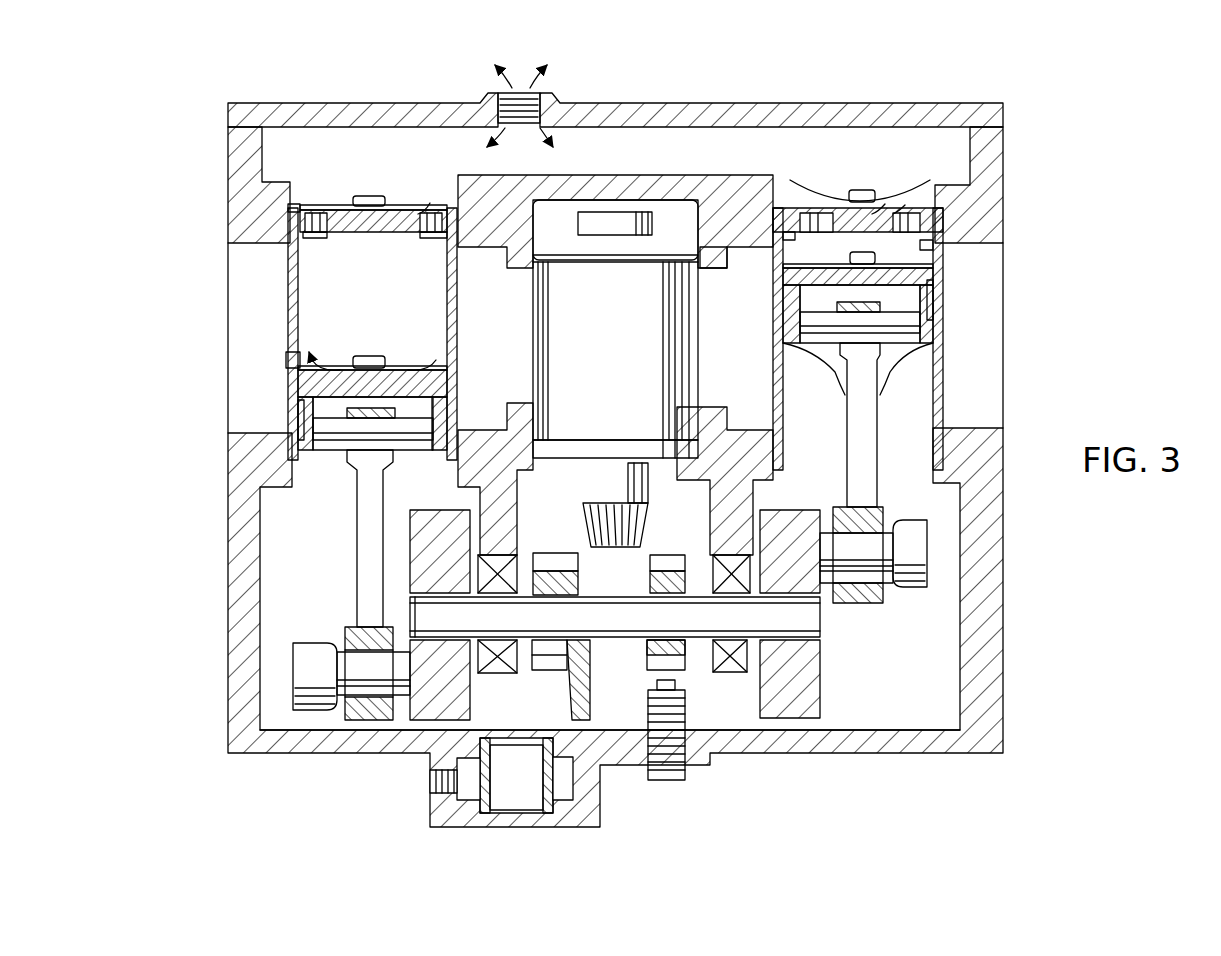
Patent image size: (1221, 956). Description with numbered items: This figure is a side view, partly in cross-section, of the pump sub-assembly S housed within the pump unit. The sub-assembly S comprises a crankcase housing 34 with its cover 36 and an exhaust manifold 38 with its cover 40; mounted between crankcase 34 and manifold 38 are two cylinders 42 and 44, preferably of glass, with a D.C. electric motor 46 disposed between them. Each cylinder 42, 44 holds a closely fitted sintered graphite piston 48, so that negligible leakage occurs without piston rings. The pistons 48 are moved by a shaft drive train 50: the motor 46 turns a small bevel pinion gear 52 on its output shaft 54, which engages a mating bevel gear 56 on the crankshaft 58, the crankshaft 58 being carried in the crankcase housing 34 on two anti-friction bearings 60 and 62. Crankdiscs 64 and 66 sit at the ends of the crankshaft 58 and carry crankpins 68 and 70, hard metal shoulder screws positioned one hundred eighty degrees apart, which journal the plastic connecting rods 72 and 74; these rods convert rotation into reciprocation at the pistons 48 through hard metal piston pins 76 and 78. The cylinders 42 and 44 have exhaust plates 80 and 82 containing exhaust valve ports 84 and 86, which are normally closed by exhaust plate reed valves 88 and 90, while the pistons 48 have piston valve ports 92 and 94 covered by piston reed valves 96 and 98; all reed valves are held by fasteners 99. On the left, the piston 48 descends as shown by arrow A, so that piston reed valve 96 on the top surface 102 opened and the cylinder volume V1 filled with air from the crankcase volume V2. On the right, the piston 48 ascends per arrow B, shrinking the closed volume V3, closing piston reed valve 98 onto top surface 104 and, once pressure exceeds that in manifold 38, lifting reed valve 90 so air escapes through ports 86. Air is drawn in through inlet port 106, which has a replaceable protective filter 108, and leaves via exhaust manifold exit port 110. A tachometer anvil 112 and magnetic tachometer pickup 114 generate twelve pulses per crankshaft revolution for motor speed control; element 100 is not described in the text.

The crankcase housing 34 is at (1003, 645).
The cover 36 is at (1003, 748).
The exhaust manifold 38 is at (705, 133).
The cover 40 is at (300, 103).
The cylinder 42 is at (288, 320).
The cylinder 44 is at (945, 340).
The D.C. electric motor 46 is at (700, 332).
The piston 48 is at (300, 405).
The shaft drive train 50 is at (925, 690).
The bevel pinion gear 52 is at (648, 520).
The motor output shaft 54 is at (664, 462).
The bevel gear 56 is at (585, 568).
The crankshaft 58 is at (822, 626).
The anti-friction bearing 60 is at (495, 675).
The anti-friction bearing 62 is at (728, 673).
The crankdisc 64 is at (425, 510).
The crankdisc 66 is at (820, 690).
The crankpin 68 is at (318, 647).
The crankpin 70 is at (905, 590).
The connecting rod 72 is at (357, 518).
The connecting rod 74 is at (877, 490).
The piston pin 76 is at (328, 443).
The piston pin 78 is at (940, 372).
The exhaust plate 80 is at (395, 233).
The exhaust plate 82 is at (942, 228).
The exhaust valve port 84 is at (428, 215).
The exhaust valve port 86 is at (776, 222).
The exhaust plate reed valve 88 is at (360, 197).
The exhaust plate reed valve 90 is at (833, 202).
The piston valve port 92 is at (444, 386).
The piston valve port 94 is at (810, 338).
The piston reed valve 96 is at (445, 330).
The piston reed valve 98 is at (858, 287).
The fastener 99 is at (392, 192).
The ledge 100 is at (300, 206).
The top surface 102 is at (290, 360).
The top surface 104 is at (778, 262).
The inlet port 106 is at (410, 780).
The replaceable protective filter 108 is at (555, 800).
The exhaust manifold exit port 110 is at (548, 84).
The tachometer anvil 112 is at (630, 652).
The magnetic tachometer pickup 114 is at (688, 770).
The pump sub-assembly S is at (1030, 90).
The cylinder volume V1 is at (380, 333).
The crankcase volume V2 is at (275, 580).
The closed volume V3 is at (975, 250).
The arrow A is at (318, 538).
The arrow B is at (895, 405).